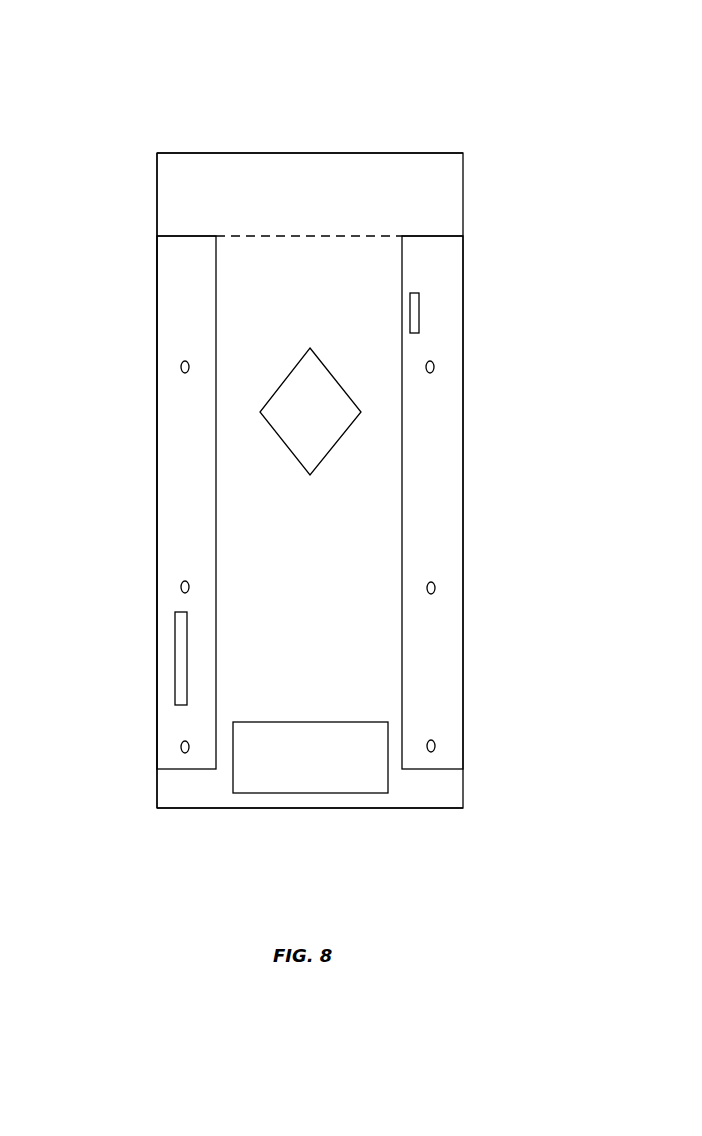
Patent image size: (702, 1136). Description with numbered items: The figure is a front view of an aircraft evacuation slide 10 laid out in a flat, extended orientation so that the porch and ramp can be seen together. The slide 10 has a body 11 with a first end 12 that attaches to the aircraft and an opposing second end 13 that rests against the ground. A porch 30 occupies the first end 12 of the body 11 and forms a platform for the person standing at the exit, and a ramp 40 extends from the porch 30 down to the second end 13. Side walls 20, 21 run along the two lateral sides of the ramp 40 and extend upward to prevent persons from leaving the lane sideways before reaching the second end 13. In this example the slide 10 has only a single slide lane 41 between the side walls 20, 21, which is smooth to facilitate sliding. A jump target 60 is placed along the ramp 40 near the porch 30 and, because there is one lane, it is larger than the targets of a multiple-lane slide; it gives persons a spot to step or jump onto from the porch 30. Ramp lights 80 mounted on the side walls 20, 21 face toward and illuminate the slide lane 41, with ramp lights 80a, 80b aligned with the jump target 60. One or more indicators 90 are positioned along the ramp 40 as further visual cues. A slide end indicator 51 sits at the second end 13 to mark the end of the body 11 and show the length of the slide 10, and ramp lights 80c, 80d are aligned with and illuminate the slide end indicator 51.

The slide 10 is at (193, 67).
The body 11 is at (218, 792).
The first end 12 is at (247, 152).
The second end 13 is at (403, 808).
The side wall 20 is at (442, 321).
The side wall 21 is at (175, 312).
The porch 30 is at (405, 172).
The ramp 40 is at (363, 270).
The slide lane 41 is at (350, 518).
The slide end indicator 51 is at (310, 773).
The jump target 60 is at (278, 403).
The ramp lights 80 is at (181, 587).
The ramp light 80a is at (434, 366).
The ramp light 80b is at (181, 366).
The ramp light 80c is at (435, 745).
The ramp light 80d is at (181, 746).
The indicator 90 is at (422, 303).